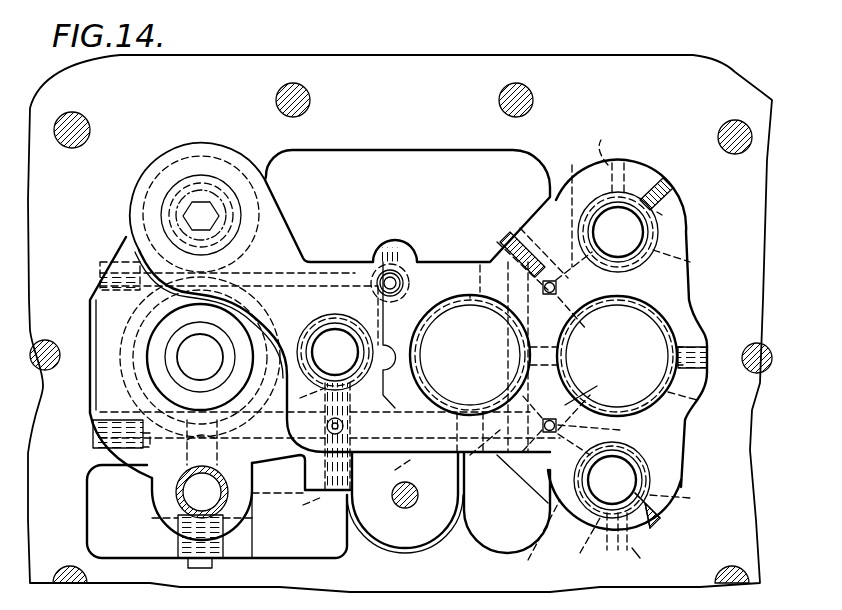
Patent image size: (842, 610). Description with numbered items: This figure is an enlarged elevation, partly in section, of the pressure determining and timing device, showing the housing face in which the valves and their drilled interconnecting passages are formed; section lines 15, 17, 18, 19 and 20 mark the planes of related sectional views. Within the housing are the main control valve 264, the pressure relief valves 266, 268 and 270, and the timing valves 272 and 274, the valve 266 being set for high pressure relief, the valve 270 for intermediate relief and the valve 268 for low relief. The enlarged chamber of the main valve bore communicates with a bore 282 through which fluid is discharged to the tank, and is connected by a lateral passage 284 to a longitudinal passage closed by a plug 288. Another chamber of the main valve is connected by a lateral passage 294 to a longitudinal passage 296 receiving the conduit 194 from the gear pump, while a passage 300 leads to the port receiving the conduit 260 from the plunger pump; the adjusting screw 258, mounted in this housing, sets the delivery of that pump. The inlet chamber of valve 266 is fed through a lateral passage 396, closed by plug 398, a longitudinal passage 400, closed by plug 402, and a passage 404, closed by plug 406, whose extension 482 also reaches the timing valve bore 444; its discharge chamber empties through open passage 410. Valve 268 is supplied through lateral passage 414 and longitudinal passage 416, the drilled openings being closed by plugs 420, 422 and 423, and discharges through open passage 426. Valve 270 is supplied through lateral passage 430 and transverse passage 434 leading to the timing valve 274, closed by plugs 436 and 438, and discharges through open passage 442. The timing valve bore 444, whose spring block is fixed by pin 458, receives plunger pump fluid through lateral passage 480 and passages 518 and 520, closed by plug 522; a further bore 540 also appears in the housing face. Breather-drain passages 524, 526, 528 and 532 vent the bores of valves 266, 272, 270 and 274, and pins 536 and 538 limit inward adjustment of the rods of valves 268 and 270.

The section line 15- 15 is at (223, 107).
The section line 17- 17 is at (23, 334).
The section line 18- 18 is at (361, 216).
The section line 19- 19 is at (527, 424).
The section line 20- 20 is at (670, 177).
The conduit 194 is at (228, 508).
The adjusting screw 258 is at (405, 508).
The conduit 260 is at (401, 275).
The main control valve 264 is at (112, 340).
The pressure control valve 266 is at (341, 316).
The pressure control valve 268 is at (634, 188).
The pressure control valve 270 is at (657, 459).
The timing valve 272 is at (468, 292).
The timing valve 274 is at (663, 309).
The bore 282 is at (155, 350).
The lateral passage 284 is at (253, 256).
The plug 288 is at (166, 192).
The lateral passage 294 is at (153, 473).
The longitudinal passage 296 is at (190, 492).
The passage 300 is at (239, 290).
The lateral passage 396 is at (306, 399).
The plug 398 is at (297, 504).
The longitudinal passage 400 is at (315, 403).
The plug 402 is at (327, 426).
The passage 404 is at (278, 485).
The plug 406 is at (96, 441).
The open passage 410 is at (354, 384).
The lateral passage 414 is at (571, 207).
The longitudinal passage 416 is at (590, 285).
The plug 420 is at (664, 215).
The plug 422 is at (512, 236).
The plug 423 is at (511, 250).
The open passage 426 is at (693, 262).
The lateral passage 430 is at (528, 492).
The transverse passage 434 is at (596, 387).
The plug 436 is at (686, 500).
The plug 438 is at (605, 430).
The open passage 442 is at (592, 548).
The valve bore 444 is at (338, 345).
The pin 458 is at (507, 503).
The lateral passage 480 is at (435, 275).
The intersecting extension 482 is at (395, 471).
The lateral passage 518 is at (519, 362).
The passage 520 is at (455, 317).
The plug 522 is at (703, 345).
The open passage 524 is at (355, 428).
The open passage 526 is at (461, 458).
The open passage 528 is at (531, 543).
The open passage 532 is at (697, 400).
The pin 536 is at (592, 143).
The pin 538 is at (651, 560).
The bore 540 is at (668, 362).